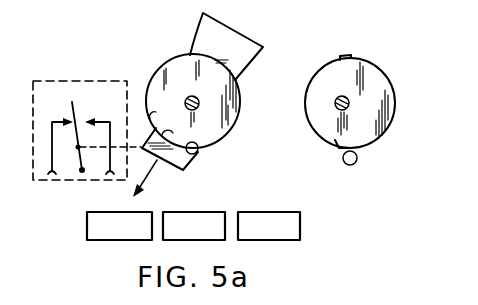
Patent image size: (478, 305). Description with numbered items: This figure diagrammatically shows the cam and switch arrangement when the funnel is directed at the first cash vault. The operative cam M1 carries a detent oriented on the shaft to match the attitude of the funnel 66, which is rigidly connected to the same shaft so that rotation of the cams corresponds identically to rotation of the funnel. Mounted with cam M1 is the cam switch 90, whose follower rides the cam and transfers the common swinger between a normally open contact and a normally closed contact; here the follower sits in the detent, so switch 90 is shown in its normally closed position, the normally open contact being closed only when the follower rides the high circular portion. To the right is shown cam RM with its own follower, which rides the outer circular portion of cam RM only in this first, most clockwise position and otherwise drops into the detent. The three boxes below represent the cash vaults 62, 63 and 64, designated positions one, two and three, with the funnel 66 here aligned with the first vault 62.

The cam switch 90 is at (42, 80).
The cam M1 is at (158, 72).
The funnel 66 is at (247, 36).
The cam RM is at (372, 63).
The cash vault 62 is at (100, 212).
The cash vault 63 is at (190, 212).
The cash vault 64 is at (268, 212).